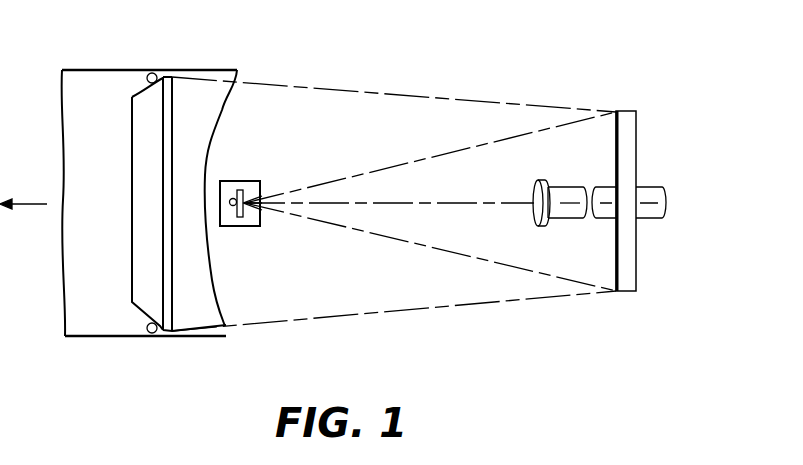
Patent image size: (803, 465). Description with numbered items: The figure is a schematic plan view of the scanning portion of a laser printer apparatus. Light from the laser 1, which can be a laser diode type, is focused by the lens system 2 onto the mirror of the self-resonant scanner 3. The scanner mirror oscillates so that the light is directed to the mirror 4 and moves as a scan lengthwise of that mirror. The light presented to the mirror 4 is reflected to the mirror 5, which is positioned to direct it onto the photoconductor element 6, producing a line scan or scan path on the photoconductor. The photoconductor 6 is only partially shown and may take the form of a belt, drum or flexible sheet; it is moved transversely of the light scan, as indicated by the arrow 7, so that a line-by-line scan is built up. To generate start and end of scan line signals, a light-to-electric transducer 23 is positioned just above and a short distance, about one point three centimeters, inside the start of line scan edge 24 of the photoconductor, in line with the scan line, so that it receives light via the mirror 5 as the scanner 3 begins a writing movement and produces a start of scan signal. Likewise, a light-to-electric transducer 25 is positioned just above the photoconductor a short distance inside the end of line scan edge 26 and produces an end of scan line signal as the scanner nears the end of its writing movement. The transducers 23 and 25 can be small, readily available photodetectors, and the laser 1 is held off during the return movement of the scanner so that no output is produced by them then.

The laser 1 is at (652, 186).
The lens system 2 is at (562, 188).
The self-resonant scanner 3 is at (243, 226).
The mirror 4 is at (640, 262).
The mirror 5 is at (143, 212).
The photoconductor element 6 is at (70, 125).
The arrow 7 is at (32, 203).
The light-to-electric transducer 23 is at (152, 334).
The start of line scan edge 24 is at (80, 338).
The light-to-electric transducer 25 is at (152, 73).
The end of line scan edge 26 is at (219, 70).